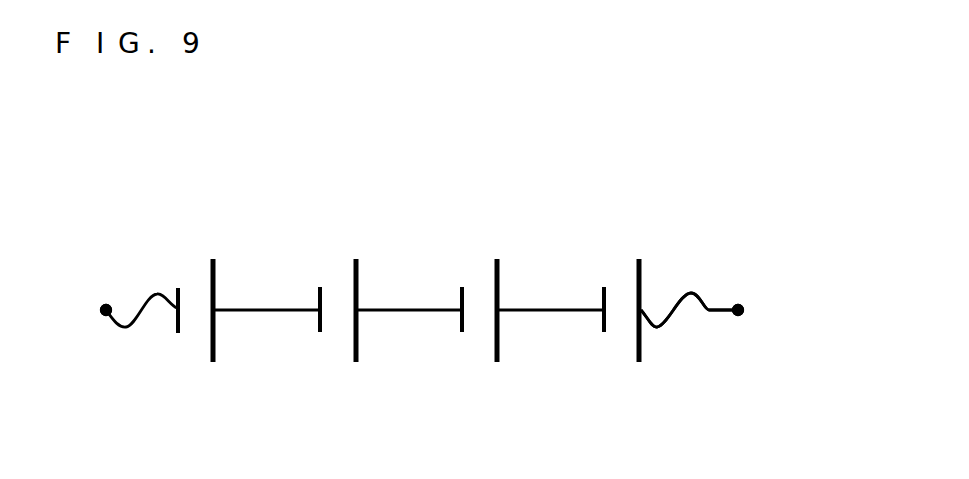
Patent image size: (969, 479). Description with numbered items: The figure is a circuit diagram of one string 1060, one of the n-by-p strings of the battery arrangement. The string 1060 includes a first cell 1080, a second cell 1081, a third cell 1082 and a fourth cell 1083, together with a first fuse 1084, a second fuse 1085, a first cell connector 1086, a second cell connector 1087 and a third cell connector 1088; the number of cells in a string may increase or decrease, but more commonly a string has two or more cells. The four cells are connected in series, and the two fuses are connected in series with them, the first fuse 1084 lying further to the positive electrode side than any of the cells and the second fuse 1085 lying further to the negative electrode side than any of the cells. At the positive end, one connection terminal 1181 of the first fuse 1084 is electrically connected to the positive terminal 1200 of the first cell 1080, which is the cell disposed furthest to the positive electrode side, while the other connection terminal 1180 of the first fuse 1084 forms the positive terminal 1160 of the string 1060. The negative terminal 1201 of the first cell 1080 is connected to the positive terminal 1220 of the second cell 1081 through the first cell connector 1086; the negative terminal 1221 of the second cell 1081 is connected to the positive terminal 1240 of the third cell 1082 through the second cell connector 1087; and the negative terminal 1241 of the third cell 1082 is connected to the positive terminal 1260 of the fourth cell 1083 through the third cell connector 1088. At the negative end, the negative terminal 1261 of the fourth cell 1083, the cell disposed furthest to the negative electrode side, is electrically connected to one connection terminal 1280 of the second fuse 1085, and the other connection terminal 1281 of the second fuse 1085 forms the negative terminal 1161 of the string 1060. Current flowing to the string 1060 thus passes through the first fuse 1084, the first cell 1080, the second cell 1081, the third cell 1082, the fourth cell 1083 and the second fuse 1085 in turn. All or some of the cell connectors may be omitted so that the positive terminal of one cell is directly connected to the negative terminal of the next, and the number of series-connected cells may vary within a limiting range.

The string 1060 is at (682, 163).
The first cell 1080 is at (620, 338).
The second cell 1081 is at (480, 338).
The third cell 1082 is at (340, 338).
The fourth cell 1083 is at (192, 340).
The first fuse 1084 is at (683, 314).
The second fuse 1085 is at (138, 323).
The first cell connector 1086 is at (548, 312).
The second cell connector 1087 is at (408, 312).
The third cell connector 1088 is at (267, 312).
The positive terminal of the string 1160 is at (740, 316).
The negative terminal of the string 1161 is at (108, 316).
The other connection terminal of the first fuse 1180 is at (740, 302).
The connection terminal of the first fuse 1181 is at (643, 307).
The positive terminal of the first cell 1200 is at (642, 272).
The negative terminal of the first cell 1201 is at (602, 297).
The positive terminal of the second cell 1220 is at (498, 272).
The negative terminal of the second cell 1221 is at (460, 297).
The positive terminal of the third cell 1240 is at (357, 272).
The negative terminal of the third cell 1241 is at (318, 290).
The positive terminal of the fourth cell 1260 is at (215, 272).
The negative terminal of the fourth cell 1261 is at (176, 290).
The connection terminal of the second fuse 1280 is at (167, 316).
The other connection terminal of the second fuse 1281 is at (107, 304).